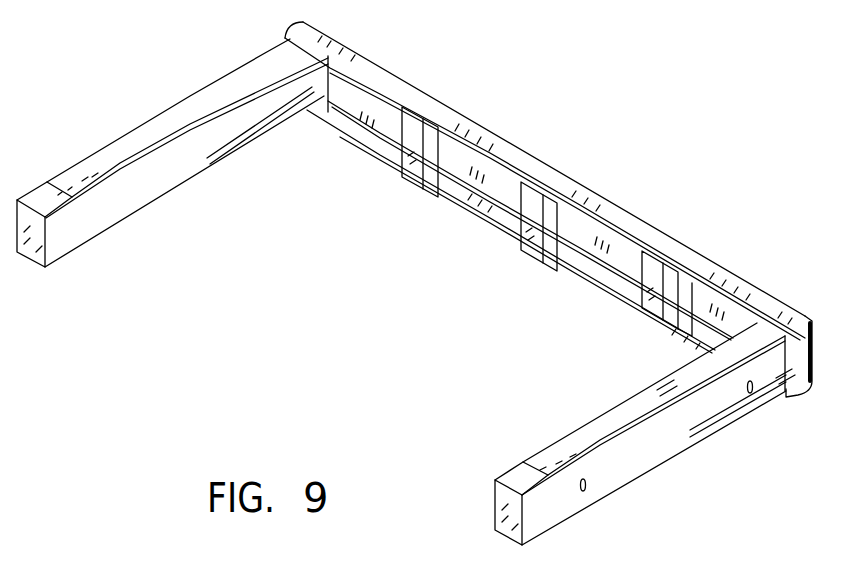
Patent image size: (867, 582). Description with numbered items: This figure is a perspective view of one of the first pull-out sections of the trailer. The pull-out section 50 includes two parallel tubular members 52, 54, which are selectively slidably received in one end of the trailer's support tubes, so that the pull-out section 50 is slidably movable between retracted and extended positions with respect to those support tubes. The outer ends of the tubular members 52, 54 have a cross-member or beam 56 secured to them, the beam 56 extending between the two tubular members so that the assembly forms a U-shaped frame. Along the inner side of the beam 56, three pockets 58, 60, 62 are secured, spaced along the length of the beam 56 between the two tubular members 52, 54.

The pull-out section 50 is at (600, 157).
The tubular member 52 is at (660, 443).
The tubular member 54 is at (140, 197).
The cross-member or beam 56 is at (602, 208).
The pocket 58 is at (657, 320).
The pocket 60 is at (535, 250).
The pocket 62 is at (423, 185).